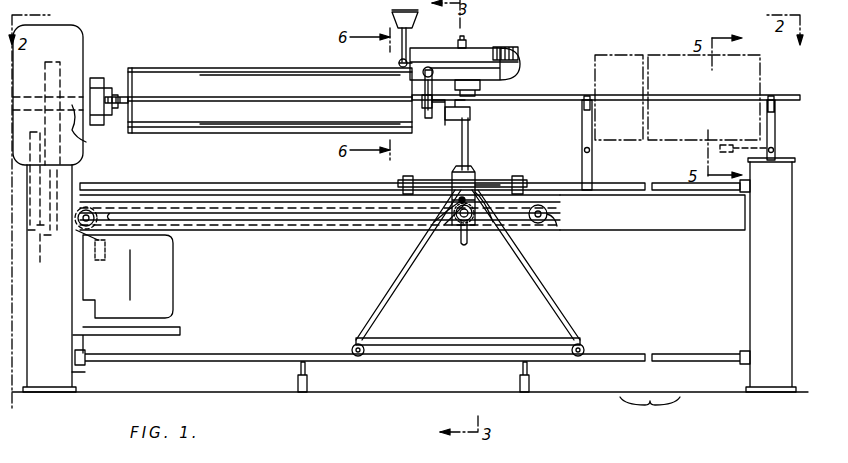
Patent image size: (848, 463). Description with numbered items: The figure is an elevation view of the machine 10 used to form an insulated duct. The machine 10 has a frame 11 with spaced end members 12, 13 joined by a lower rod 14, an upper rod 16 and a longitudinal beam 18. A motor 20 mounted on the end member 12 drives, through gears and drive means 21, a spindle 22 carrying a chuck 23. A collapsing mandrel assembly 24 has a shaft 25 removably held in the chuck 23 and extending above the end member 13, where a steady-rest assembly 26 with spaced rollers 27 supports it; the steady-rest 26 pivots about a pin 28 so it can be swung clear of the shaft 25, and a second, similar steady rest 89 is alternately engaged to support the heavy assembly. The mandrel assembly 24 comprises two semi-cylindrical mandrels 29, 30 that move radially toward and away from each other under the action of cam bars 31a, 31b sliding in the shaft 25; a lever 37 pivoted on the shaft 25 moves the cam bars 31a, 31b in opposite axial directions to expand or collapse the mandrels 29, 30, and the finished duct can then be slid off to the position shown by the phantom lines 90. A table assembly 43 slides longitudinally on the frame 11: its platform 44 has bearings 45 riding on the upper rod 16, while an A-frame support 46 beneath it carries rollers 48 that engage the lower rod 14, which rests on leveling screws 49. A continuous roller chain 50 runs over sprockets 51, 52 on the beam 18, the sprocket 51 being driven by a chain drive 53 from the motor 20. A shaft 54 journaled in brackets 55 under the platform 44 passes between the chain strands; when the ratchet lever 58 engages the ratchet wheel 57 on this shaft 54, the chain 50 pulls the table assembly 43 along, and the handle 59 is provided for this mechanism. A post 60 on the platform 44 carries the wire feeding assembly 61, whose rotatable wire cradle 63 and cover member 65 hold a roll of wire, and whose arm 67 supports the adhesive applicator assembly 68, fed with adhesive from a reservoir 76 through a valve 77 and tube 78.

The machine 10 is at (398, 402).
The frame 11 is at (80, 375).
The end member 12 is at (58, 370).
The end member 13 is at (786, 365).
The lower rod 14 is at (645, 347).
The upper rod 16 is at (680, 186).
The longitudinal beam 18 is at (632, 230).
The motor 20 is at (150, 305).
The gears and drive means 21 is at (47, 255).
The spindle 22 is at (84, 130).
The chuck 23 is at (100, 78).
The collapsing mandrel assembly 24 is at (207, 66).
The shaft 25 is at (575, 86).
The steady-rest assembly 26 is at (765, 115).
The rollers 27 is at (771, 98).
The pin 28 is at (770, 165).
The semi-cylindrical mandrel 29 is at (286, 78).
The semi-cylindrical mandrel 30 is at (264, 130).
The cam bar 31a is at (420, 90).
The cam bar 31b is at (420, 115).
The lever 37 is at (443, 122).
The table assembly 43 is at (392, 249).
The platform 44 is at (490, 182).
The bearings 45 is at (400, 181).
The A-frame support 46 is at (376, 287).
The rollers 48 is at (352, 347).
The leveling screws 49 is at (310, 375).
The continuous roller chain 50 is at (288, 235).
The sprocket 51 is at (90, 208).
The sprocket 52 is at (556, 219).
The chain drive 53 is at (100, 234).
The shaft 54 is at (470, 225).
The brackets 55 is at (463, 176).
The ratchet wheel 57 is at (445, 226).
The ratchet lever 58 is at (496, 226).
The handle 59 is at (461, 248).
The post 60 is at (460, 160).
The wire feeding assembly 61 is at (521, 52).
The wire cradle 63 is at (515, 74).
The cover member 65 is at (500, 47).
The arm 67 is at (472, 114).
The adhesive applicator assembly 68 is at (396, 62).
The reservoir 76 is at (392, 15).
The valve 77 is at (404, 62).
The tube 78 is at (466, 48).
The steady rest 89 is at (580, 127).
The phantom lines 90 is at (628, 55).